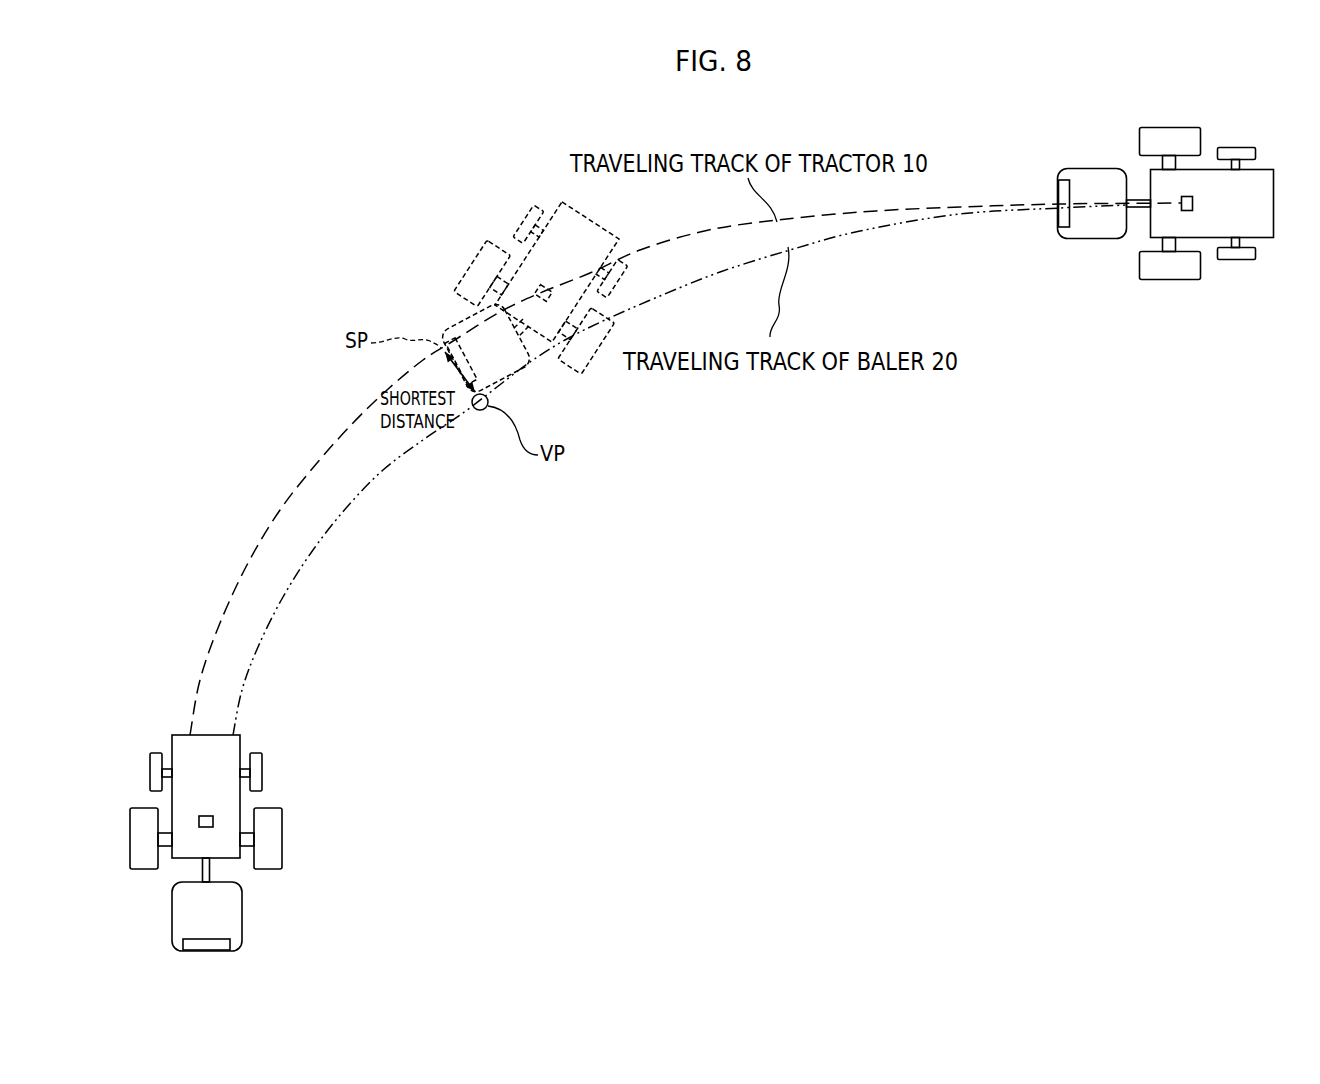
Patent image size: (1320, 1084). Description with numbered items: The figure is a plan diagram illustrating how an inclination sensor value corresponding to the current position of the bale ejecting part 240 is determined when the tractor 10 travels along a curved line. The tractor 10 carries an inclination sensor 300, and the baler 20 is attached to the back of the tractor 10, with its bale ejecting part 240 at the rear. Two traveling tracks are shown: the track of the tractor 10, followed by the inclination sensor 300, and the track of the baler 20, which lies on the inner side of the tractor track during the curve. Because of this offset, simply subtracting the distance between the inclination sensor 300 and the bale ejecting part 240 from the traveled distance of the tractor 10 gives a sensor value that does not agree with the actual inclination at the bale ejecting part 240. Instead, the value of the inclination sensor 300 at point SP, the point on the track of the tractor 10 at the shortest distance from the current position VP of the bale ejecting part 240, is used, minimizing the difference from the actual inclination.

The tractor 10 is at (243, 800).
The baler 20 is at (243, 900).
The inclination sensor 300 is at (213, 822).
The bale ejecting part 240 is at (231, 942).